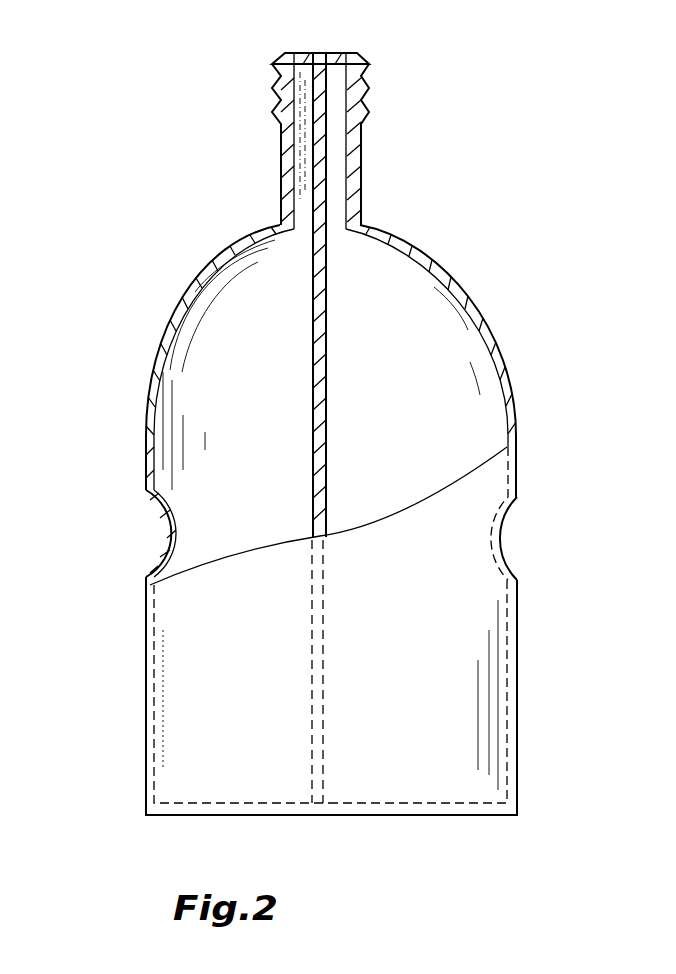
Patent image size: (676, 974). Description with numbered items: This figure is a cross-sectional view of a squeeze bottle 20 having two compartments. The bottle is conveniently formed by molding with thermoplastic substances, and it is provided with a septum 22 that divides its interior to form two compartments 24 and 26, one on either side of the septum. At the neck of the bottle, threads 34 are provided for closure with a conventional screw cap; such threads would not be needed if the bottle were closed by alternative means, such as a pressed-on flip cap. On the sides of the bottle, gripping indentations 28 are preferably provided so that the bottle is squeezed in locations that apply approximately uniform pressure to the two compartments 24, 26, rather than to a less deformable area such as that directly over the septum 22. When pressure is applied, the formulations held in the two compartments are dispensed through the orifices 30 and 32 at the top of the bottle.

The squeeze bottle 20 is at (140, 327).
The septum 22 is at (328, 347).
The compartment 24 is at (462, 732).
The compartment 26 is at (172, 732).
The gripping indentations 28 is at (158, 528).
The orifice 30 is at (336, 49).
The orifice 32 is at (300, 50).
The threads 34 is at (372, 105).